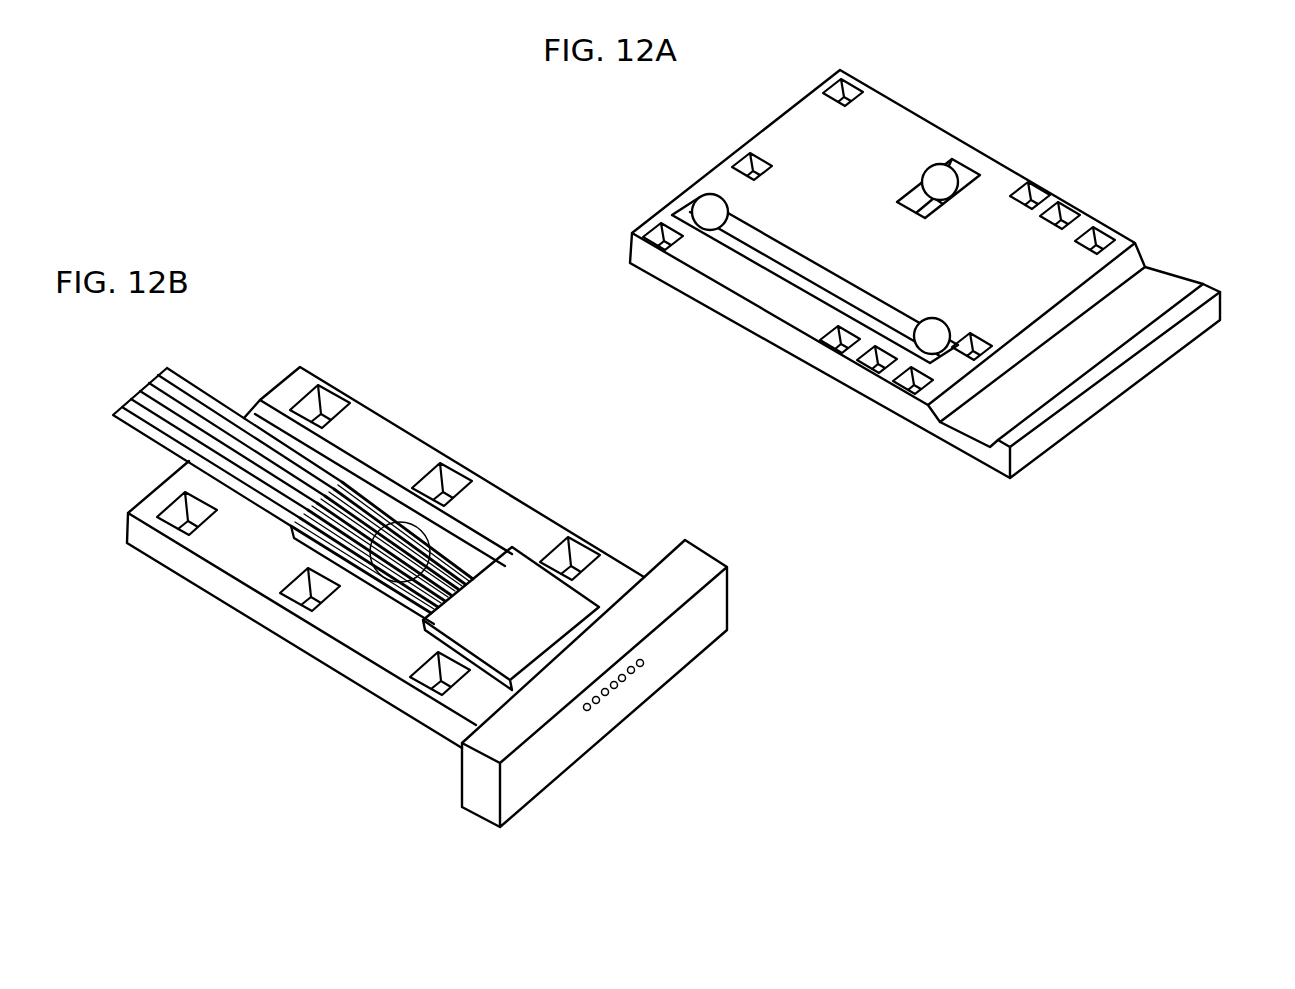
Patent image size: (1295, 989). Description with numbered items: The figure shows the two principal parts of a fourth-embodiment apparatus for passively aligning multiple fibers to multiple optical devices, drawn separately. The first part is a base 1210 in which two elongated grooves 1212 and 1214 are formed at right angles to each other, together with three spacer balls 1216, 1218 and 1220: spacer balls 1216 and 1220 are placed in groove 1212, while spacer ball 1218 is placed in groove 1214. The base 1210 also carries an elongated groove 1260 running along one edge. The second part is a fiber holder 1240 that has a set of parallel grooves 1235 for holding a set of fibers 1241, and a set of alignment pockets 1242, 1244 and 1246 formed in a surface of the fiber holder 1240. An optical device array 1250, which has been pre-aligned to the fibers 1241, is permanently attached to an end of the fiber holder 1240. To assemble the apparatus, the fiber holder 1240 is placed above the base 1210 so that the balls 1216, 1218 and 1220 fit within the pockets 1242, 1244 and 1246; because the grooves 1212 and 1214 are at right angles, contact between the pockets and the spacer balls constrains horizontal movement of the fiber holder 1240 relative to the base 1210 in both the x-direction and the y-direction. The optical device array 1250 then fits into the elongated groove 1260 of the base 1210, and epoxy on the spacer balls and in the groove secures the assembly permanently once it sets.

In FIG. 12A, the base 1210 is at (663, 283).
In FIG. 12A, the elongated groove 1212 is at (680, 208).
In FIG. 12A, the elongated groove 1214 is at (977, 170).
In FIG. 12A, the spacer ball 1216 is at (707, 193).
In FIG. 12A, the spacer ball 1218 is at (930, 160).
In FIG. 12A, the spacer ball 1220 is at (920, 343).
In FIG. 12A, the elongated groove 1260 is at (1160, 267).
In FIG. 12B, the parallel grooves 1235 is at (450, 528).
In FIG. 12B, the fiber holder 1240 is at (203, 598).
In FIG. 12B, the fibers 1241 is at (172, 356).
In FIG. 12B, the alignment pocket 1242 is at (330, 402).
In FIG. 12B, the alignment pocket 1244 is at (580, 557).
In FIG. 12B, the alignment pocket 1246 is at (300, 615).
In FIG. 12B, the optical device array 1250 is at (462, 780).